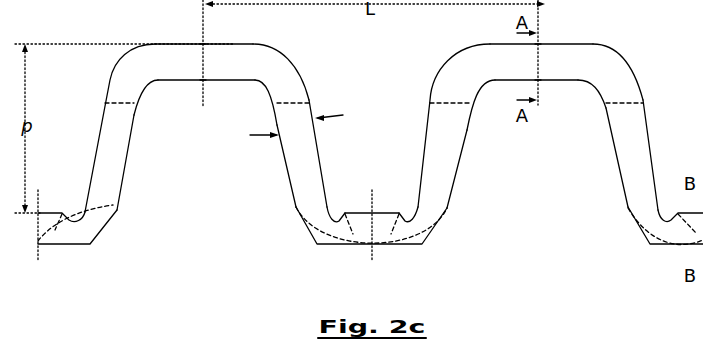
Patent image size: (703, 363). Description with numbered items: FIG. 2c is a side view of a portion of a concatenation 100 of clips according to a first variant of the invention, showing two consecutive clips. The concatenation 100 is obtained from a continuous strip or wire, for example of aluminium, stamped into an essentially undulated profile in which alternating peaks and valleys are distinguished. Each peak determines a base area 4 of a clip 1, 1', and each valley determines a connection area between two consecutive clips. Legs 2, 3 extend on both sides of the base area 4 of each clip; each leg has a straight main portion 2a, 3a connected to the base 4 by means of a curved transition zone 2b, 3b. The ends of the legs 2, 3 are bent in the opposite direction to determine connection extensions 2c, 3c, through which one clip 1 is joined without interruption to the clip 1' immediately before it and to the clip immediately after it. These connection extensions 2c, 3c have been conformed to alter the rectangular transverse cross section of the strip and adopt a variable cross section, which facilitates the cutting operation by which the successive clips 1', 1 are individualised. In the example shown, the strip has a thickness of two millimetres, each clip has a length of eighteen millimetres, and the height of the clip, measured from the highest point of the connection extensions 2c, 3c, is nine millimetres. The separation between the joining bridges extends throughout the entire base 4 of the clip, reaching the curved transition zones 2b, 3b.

The concatenation 100 is at (118, 62).
The clip 1 is at (224, 43).
The clip immediately before 1' is at (564, 43).
The base area 4 is at (146, 44).
The leg 2 is at (129, 134).
The straight main portion 2a is at (105, 130).
The curved transition zone 2b is at (110, 98).
The connection extension 2c is at (390, 210).
The leg 3 is at (293, 162).
The straight main portion 3a is at (313, 142).
The curved transition zone 3b is at (300, 97).
The connection extension 3c is at (352, 212).